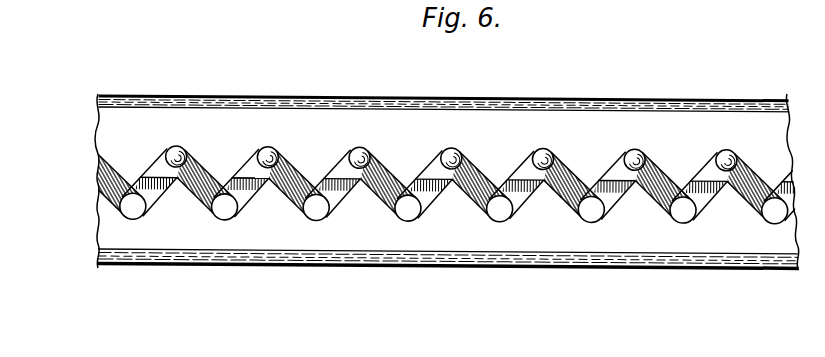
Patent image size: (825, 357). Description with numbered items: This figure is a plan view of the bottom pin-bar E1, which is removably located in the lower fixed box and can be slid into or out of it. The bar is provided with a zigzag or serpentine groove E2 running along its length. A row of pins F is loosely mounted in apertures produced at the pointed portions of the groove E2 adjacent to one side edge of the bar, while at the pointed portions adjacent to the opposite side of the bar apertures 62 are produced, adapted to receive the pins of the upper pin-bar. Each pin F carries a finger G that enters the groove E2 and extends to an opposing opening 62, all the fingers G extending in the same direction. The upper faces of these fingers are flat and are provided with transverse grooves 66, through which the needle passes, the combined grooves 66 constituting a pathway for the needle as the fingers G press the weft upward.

The pin-bar E1 is at (597, 109).
The zigzag or serpentine groove E2 is at (670, 166).
The fingers G is at (613, 163).
The pins F is at (547, 153).
The apertures 62 is at (488, 213).
The transverse grooves 66 is at (153, 182).